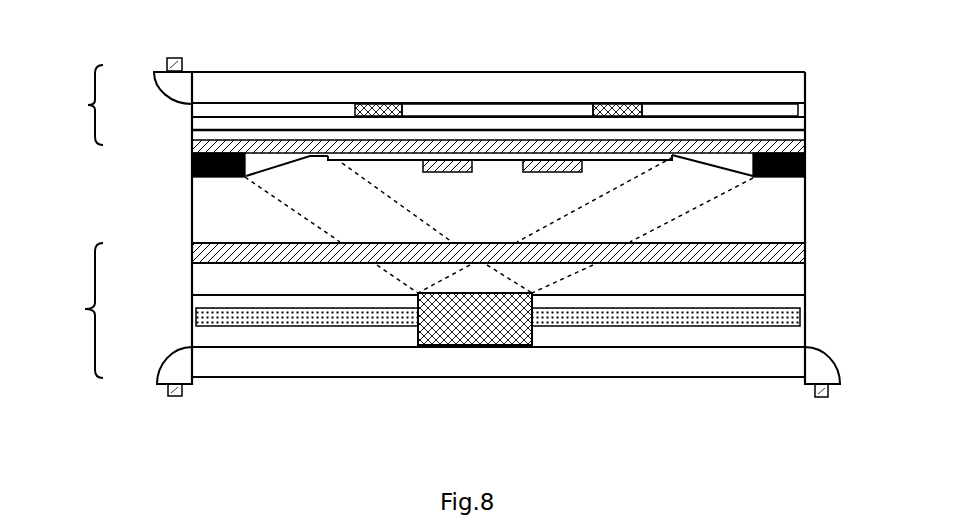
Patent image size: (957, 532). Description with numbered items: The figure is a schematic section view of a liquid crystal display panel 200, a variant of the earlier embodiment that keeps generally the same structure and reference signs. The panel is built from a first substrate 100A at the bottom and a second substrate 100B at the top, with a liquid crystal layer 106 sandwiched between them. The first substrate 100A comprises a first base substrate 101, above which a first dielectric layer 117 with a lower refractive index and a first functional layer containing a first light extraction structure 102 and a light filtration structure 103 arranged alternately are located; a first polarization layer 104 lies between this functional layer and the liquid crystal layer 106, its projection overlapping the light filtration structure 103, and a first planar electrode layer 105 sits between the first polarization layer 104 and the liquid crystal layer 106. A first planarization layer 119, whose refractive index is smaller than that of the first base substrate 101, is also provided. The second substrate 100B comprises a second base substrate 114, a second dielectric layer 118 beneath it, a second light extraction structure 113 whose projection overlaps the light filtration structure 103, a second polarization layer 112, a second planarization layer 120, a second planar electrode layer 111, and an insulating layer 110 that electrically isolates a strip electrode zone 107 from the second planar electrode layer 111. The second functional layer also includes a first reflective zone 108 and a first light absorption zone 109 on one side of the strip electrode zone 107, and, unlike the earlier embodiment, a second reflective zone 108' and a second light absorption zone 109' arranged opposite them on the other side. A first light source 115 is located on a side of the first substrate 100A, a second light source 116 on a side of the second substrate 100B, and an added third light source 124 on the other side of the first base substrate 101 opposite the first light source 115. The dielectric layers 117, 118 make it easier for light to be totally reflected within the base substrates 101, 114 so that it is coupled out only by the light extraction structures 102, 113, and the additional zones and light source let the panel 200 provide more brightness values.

The liquid crystal display panel 200 is at (541, 34).
The first substrate 100A is at (62, 310).
The second substrate 100B is at (64, 105).
The first base substrate 101 is at (608, 367).
The first light extraction structure 102 is at (470, 325).
The light filtration structure 103 is at (786, 318).
The first polarization layer 104 is at (786, 300).
The first planar electrode layer 105 is at (215, 251).
The liquid crystal layer 106 is at (220, 218).
The strip electrode zone 107 is at (573, 160).
The first reflective zone 108 is at (700, 185).
The second reflective zone 108' is at (298, 185).
The first light absorption zone 109 is at (826, 165).
The second light absorption zone 109' is at (163, 168).
The insulating layer 110 is at (505, 160).
The second planar electrode layer 111 is at (220, 146).
The second polarization layer 112 is at (222, 124).
The second light extraction structure 113 is at (392, 107).
The second base substrate 114 is at (786, 80).
The first light source 115 is at (183, 393).
The second light source 116 is at (174, 56).
The first dielectric layer 117 is at (786, 340).
The second dielectric layer 118 is at (782, 110).
The first planarization layer 119 is at (786, 274).
The second planarization layer 120 is at (785, 135).
The third light source 124 is at (815, 393).